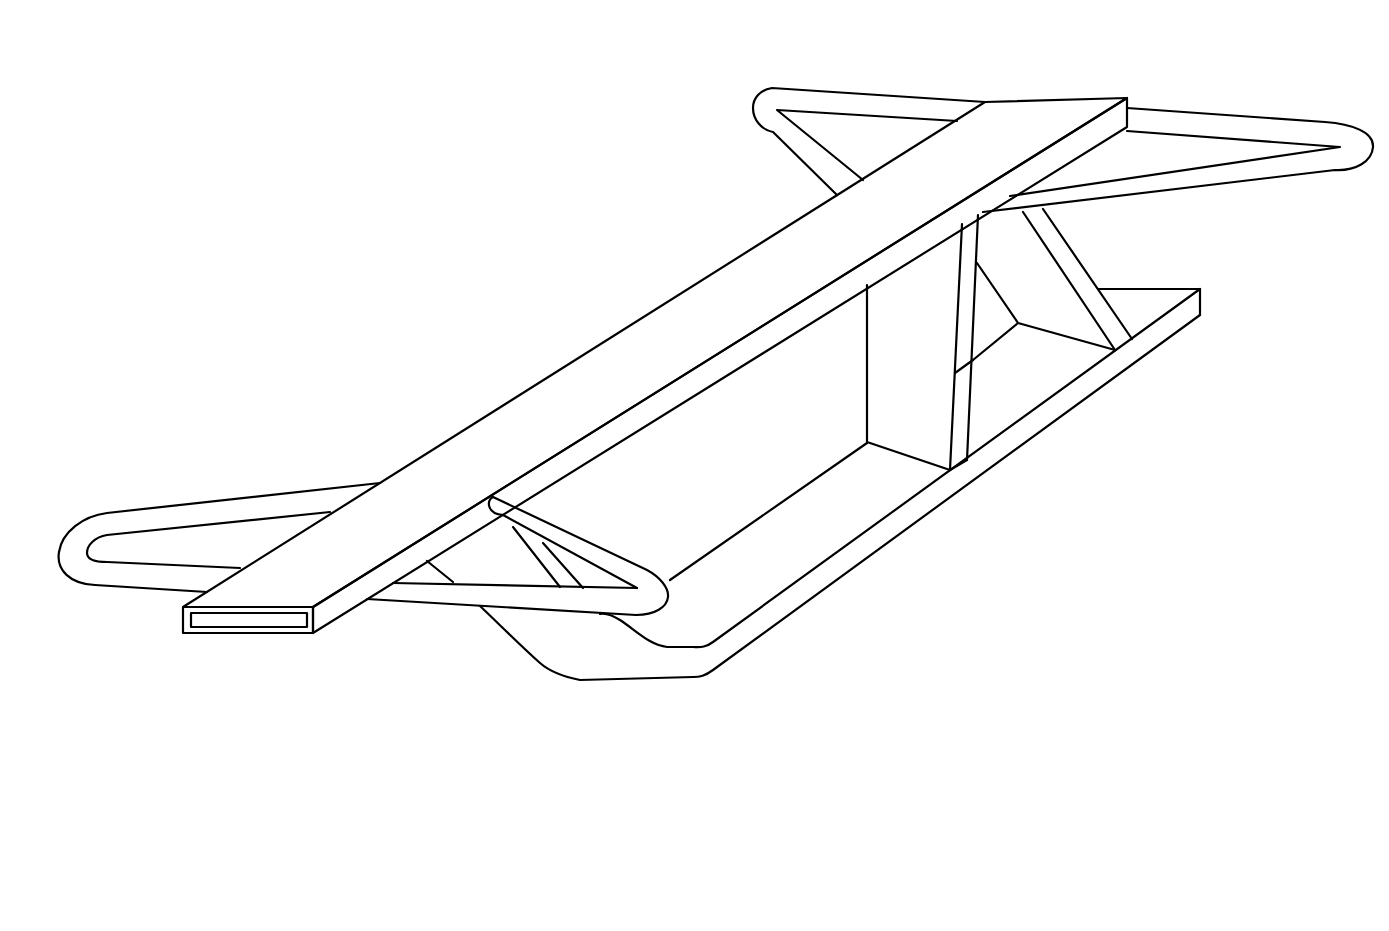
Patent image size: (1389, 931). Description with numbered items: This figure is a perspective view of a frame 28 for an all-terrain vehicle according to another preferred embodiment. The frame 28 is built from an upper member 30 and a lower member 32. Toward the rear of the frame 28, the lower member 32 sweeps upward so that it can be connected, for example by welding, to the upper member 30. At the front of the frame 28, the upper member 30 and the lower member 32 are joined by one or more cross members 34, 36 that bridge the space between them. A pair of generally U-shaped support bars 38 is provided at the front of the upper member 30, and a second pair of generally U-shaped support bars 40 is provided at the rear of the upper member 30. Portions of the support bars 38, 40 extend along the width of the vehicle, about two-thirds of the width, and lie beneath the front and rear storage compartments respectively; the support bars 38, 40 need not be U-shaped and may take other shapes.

The frame 28 is at (630, 221).
The upper member 30 is at (737, 322).
The lower member 32 is at (877, 505).
The cross member 34 is at (927, 384).
The cross member 36 is at (1042, 266).
The support bars 38 is at (877, 97).
The support bars 40 is at (123, 576).